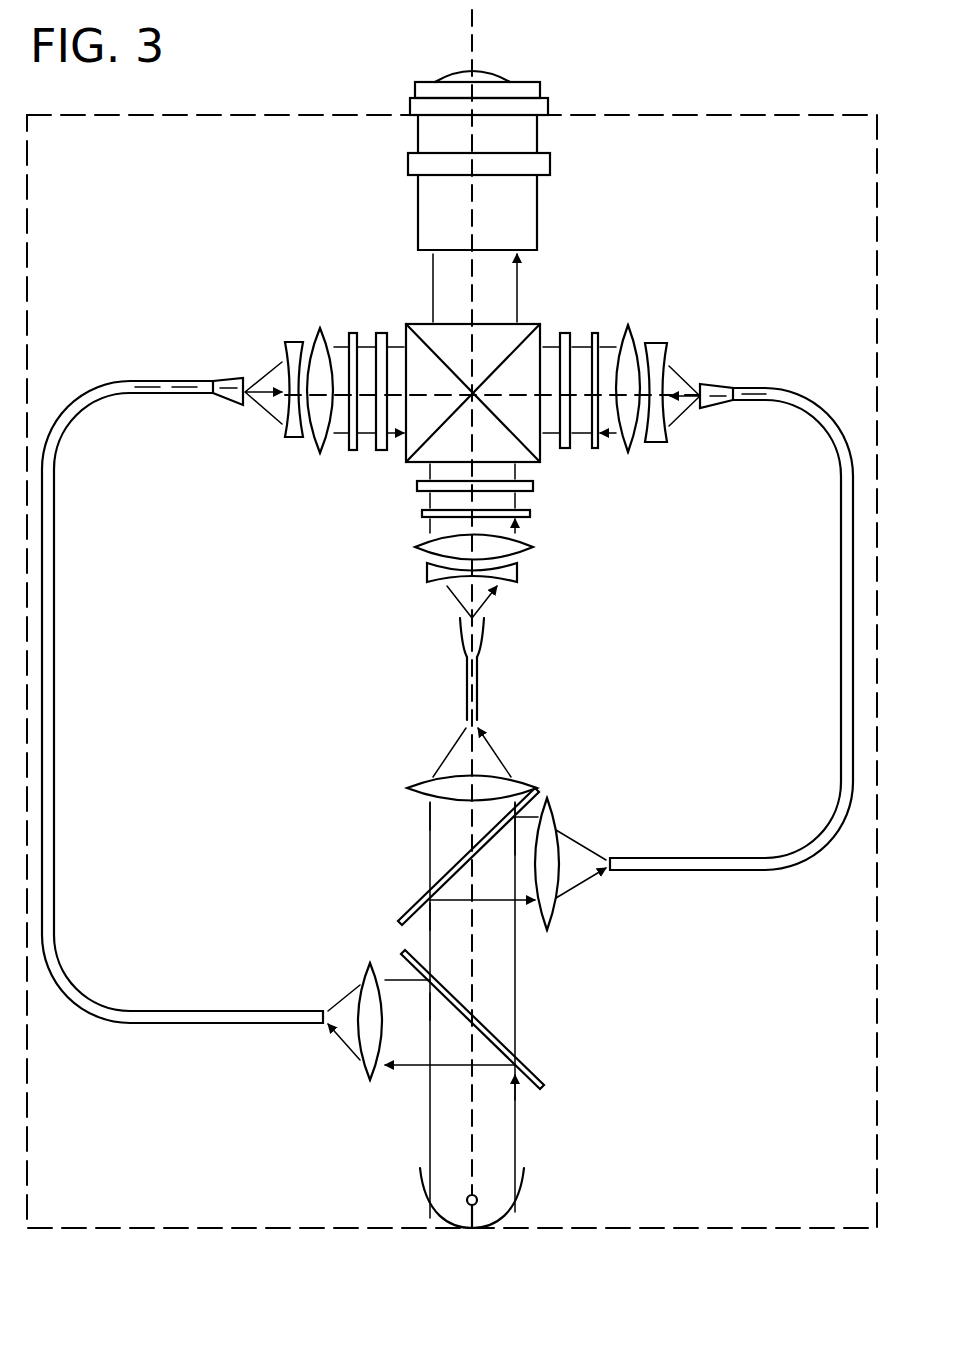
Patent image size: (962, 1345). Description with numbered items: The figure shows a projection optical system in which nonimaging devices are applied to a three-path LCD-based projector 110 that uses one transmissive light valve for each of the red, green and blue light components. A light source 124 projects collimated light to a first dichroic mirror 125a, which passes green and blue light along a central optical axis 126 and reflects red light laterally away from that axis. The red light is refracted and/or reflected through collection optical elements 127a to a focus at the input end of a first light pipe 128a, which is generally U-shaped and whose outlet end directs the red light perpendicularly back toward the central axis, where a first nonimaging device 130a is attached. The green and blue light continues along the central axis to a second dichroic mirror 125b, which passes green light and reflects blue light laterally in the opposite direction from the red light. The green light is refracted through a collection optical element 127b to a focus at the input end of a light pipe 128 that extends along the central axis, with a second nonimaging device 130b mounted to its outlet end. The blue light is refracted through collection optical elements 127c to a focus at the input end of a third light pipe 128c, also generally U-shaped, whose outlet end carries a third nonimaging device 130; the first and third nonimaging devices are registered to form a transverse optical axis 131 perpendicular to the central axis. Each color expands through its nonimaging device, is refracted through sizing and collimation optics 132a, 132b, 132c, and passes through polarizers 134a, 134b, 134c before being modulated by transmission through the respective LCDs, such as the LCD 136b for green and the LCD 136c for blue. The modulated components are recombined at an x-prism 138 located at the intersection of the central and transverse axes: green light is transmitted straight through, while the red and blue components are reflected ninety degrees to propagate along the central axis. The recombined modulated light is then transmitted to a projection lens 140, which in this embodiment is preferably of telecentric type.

The projector 110 is at (252, 108).
The light source 124 is at (435, 1211).
The first dichroic mirror 125a is at (490, 1038).
The second dichroic mirror 125b is at (400, 902).
The central optical axis 126 is at (472, 968).
The collection optical elements 127a is at (362, 1045).
The collection optical element 127b is at (490, 776).
The collection optical elements 127c is at (557, 838).
The second light pipe 128 is at (479, 687).
The first light pipe 128a is at (55, 803).
The third light pipe 128c is at (840, 657).
The third nonimaging device 130 is at (713, 396).
The first nonimaging device 130a is at (217, 406).
The second nonimaging device 130b is at (483, 632).
The transverse optical axis 131 is at (693, 412).
The sizing and collimation optics 132a is at (330, 326).
The sizing and collimation optics 132b is at (418, 535).
The sizing and collimation optics 132c is at (672, 326).
The polarizer 134a is at (353, 330).
The polarizer 134b is at (421, 516).
The polarizer 134c is at (595, 330).
The LCD 136b is at (416, 484).
The LCD 136c is at (565, 330).
The x-prism 138 is at (542, 462).
The projection lens 140 is at (546, 95).